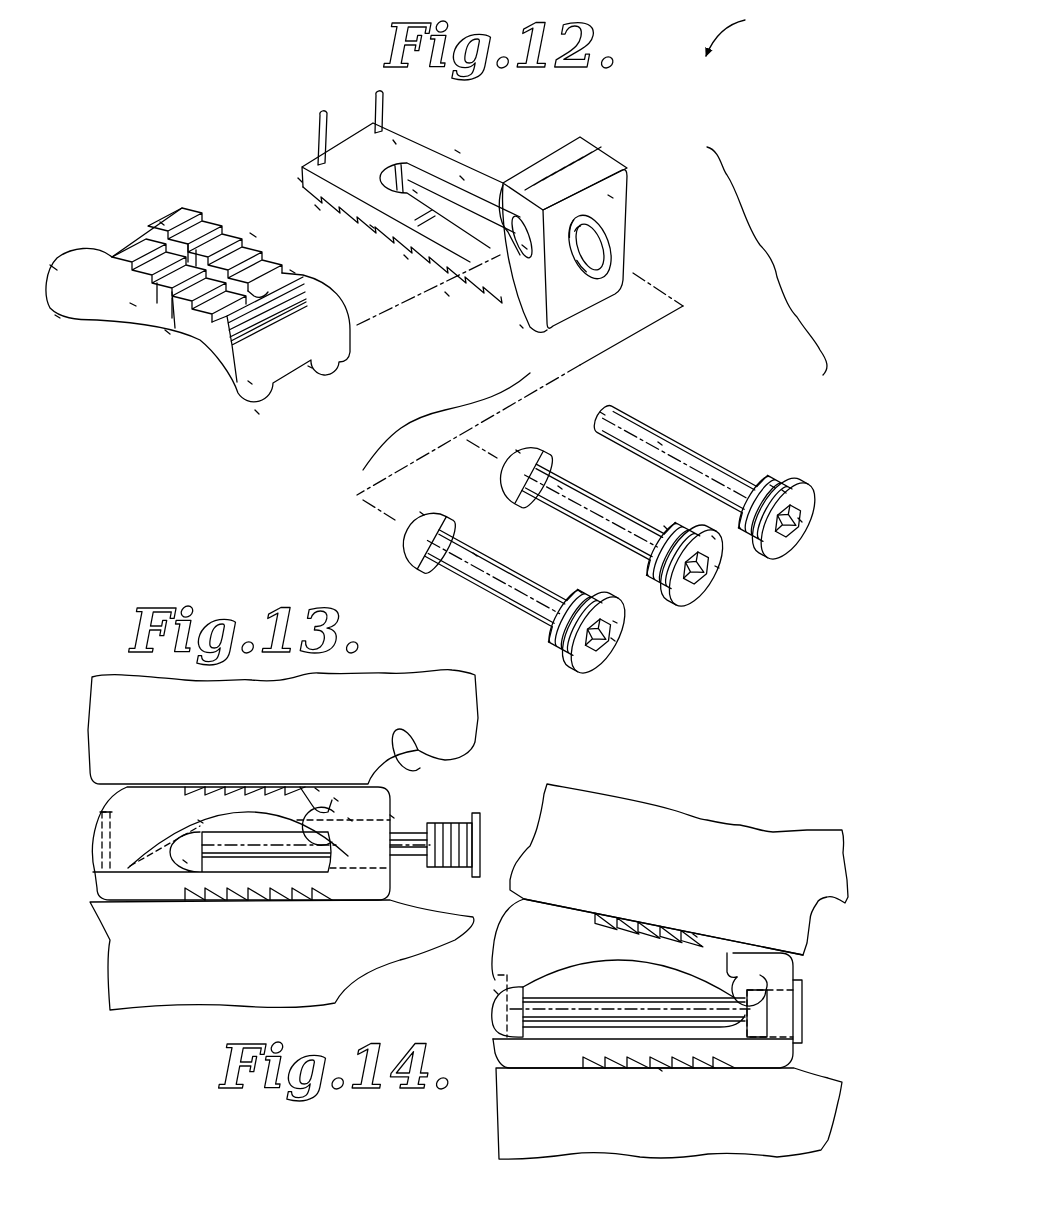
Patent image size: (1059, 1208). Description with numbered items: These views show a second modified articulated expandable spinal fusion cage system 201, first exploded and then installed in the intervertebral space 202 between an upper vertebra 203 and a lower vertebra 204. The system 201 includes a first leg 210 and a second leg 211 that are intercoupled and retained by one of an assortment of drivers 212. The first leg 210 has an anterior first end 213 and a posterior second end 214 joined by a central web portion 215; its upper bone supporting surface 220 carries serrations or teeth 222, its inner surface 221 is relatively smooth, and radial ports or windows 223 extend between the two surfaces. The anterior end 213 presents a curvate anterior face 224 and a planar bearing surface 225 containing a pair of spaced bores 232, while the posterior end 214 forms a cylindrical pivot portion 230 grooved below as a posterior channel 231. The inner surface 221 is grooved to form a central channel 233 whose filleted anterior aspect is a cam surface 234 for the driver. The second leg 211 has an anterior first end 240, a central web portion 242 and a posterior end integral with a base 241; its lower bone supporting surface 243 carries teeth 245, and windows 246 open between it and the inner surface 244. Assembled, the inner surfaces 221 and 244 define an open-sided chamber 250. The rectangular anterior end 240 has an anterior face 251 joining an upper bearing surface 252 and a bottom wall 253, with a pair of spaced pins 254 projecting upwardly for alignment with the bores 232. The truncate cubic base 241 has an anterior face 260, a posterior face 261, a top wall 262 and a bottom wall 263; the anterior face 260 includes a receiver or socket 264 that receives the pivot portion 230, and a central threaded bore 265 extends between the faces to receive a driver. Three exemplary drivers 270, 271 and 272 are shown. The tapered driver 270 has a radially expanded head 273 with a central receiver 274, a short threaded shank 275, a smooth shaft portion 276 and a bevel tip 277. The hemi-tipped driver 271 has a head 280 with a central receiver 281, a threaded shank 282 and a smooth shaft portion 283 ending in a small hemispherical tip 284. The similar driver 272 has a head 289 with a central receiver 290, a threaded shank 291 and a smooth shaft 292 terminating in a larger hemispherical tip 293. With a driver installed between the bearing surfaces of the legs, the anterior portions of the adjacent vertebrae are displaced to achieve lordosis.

In FIG. 12, the articulated expandable spinal fusion cage system 201 is at (767, 193).
In FIG. 13, the intervertebral space 202 is at (60, 834).
In FIG. 13, the upper vertebra 203 is at (87, 740).
In FIG. 14, the upper vertebra 203 is at (665, 830).
In FIG. 13, the lower vertebra 204 is at (90, 958).
In FIG. 14, the lower vertebra 204 is at (527, 1123).
In FIG. 12, the first leg 210 is at (92, 237).
In FIG. 12, the second leg 211 is at (459, 152).
In FIG. 12, the drivers 212 is at (446, 410).
In FIG. 12, the anterior first end 213 is at (130, 223).
In FIG. 12, the posterior second end 214 is at (257, 413).
In FIG. 12, the central web portion 215 is at (133, 304).
In FIG. 12, the upper bone supporting surface 220 is at (233, 231).
In FIG. 13, the upper bone supporting surface 220 is at (238, 780).
In FIG. 14, the upper bone supporting surface 220 is at (649, 930).
In FIG. 12, the inner surface 221 is at (166, 334).
In FIG. 12, the serrations or teeth 222 is at (250, 233).
In FIG. 14, the serrations or teeth 222 is at (695, 935).
In FIG. 12, the radial ports or windows 223 is at (292, 271).
In FIG. 12, the curvate anterior face 224 is at (49, 264).
In FIG. 14, the curvate anterior face 224 is at (525, 899).
In FIG. 12, the bearing surface 225 is at (58, 318).
In FIG. 14, the bearing surface 225 is at (513, 993).
In FIG. 12, the pivot portion 230 is at (250, 381).
In FIG. 14, the pivot portion 230 is at (765, 975).
In FIG. 12, the posterior channel 231 is at (310, 368).
In FIG. 13, the posterior channel 231 is at (350, 820).
In FIG. 13, the spaced bores 232 is at (87, 830).
In FIG. 13, the central channel 233 is at (200, 823).
In FIG. 13, the cam surface 234 is at (185, 862).
In FIG. 12, the anterior first end 240 is at (348, 132).
In FIG. 12, the base 241 is at (611, 150).
In FIG. 12, the central web portion 242 is at (406, 259).
In FIG. 12, the lower bone supporting surface 243 is at (447, 297).
In FIG. 12, the inner surface 244 is at (461, 178).
In FIG. 12, the serrations or teeth 245 is at (373, 225).
In FIG. 14, the serrations or teeth 245 is at (660, 1068).
In FIG. 12, the radial ports or windows 246 is at (413, 192).
In FIG. 13, the open-sided chamber 250 is at (287, 863).
In FIG. 14, the open-sided chamber 250 is at (652, 972).
In FIG. 12, the anterior face 251 is at (298, 180).
In FIG. 12, the upper bearing surface 252 is at (393, 142).
In FIG. 12, the bottom wall 253 is at (318, 207).
In FIG. 12, the spaced pins 254 is at (321, 112).
In FIG. 14, the spaced pins 254 is at (496, 993).
In FIG. 13, the anterior face 260 is at (317, 788).
In FIG. 12, the posterior face 261 is at (610, 197).
In FIG. 13, the posterior face 261 is at (394, 818).
In FIG. 12, the top wall 262 is at (572, 160).
In FIG. 12, the bottom wall 263 is at (522, 326).
In FIG. 12, the receiver or socket 264 is at (525, 248).
In FIG. 13, the receiver or socket 264 is at (336, 800).
In FIG. 12, the central threaded bore 265 is at (600, 262).
In FIG. 12, the tapered driver 270 is at (785, 563).
In FIG. 12, the hemi-tipped driver 271 is at (706, 603).
In FIG. 12, the hemi-tipped driver 272 is at (600, 673).
In FIG. 12, the radially expanded head 273 is at (784, 490).
In FIG. 12, the central receiver 274 is at (800, 520).
In FIG. 12, the short threaded shank 275 is at (772, 486).
In FIG. 12, the smooth shaft portion 276 is at (658, 442).
In FIG. 12, the bevel tip 277 is at (600, 412).
In FIG. 12, the radially expanded head 280 is at (716, 566).
In FIG. 12, the central receiver 281 is at (713, 538).
In FIG. 12, the short threaded shank 282 is at (665, 528).
In FIG. 12, the smooth shaft portion 283 is at (560, 487).
In FIG. 12, the hemispherical tip 284 is at (518, 452).
In FIG. 12, the head 289 is at (615, 622).
In FIG. 13, the head 289 is at (476, 833).
In FIG. 14, the head 289 is at (804, 1024).
In FIG. 12, the central receiver 290 is at (613, 640).
In FIG. 12, the short threaded shank 291 is at (580, 592).
In FIG. 13, the short threaded shank 291 is at (436, 842).
In FIG. 12, the smooth shaft 292 is at (475, 554).
In FIG. 13, the smooth shaft 292 is at (237, 848).
In FIG. 12, the hemispherical tip 293 is at (422, 513).